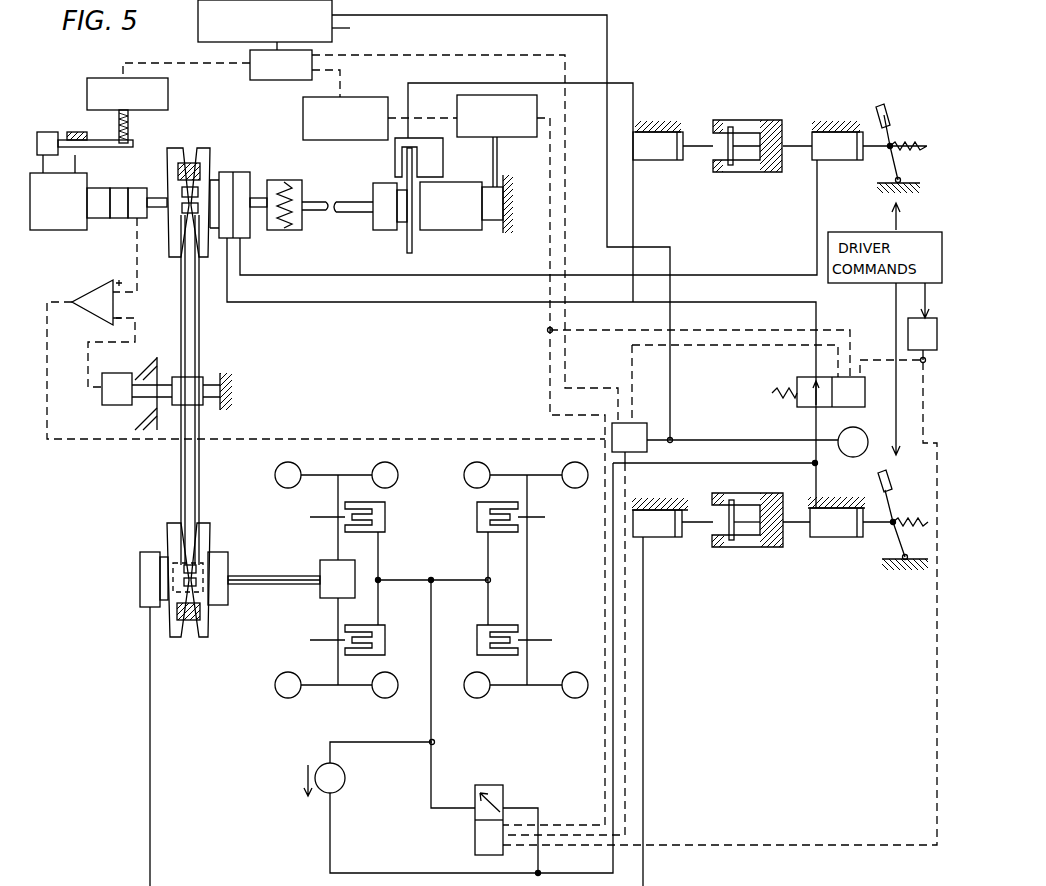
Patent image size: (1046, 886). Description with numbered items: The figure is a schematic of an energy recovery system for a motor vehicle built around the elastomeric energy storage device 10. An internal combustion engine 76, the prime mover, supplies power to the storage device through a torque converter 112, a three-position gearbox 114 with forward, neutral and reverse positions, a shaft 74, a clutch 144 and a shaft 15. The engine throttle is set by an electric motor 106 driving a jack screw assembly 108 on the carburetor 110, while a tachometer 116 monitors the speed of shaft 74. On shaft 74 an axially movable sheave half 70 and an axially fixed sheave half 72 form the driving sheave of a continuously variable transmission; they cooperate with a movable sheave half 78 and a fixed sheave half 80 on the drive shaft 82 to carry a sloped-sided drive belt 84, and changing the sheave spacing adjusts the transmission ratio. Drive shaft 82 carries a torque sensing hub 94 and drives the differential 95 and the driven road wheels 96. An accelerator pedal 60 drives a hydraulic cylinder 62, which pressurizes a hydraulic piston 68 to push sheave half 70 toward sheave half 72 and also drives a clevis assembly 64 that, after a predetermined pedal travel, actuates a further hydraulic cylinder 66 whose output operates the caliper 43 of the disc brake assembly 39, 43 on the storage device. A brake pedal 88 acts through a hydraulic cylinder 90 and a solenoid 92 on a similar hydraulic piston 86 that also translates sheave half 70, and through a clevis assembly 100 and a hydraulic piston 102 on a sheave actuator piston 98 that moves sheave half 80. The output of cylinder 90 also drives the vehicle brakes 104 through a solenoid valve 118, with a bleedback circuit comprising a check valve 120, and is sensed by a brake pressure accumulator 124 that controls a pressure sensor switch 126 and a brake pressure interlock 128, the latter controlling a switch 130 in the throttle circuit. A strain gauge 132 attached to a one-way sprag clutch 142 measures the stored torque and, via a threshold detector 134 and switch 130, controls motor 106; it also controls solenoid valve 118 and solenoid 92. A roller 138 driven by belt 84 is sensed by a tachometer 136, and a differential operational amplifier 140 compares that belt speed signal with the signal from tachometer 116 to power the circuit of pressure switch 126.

The elastomeric energy storage device 10 is at (437, 237).
The shaft 15 is at (352, 214).
The disc brake assembly 39 is at (409, 253).
The caliper 43 is at (443, 165).
The accelerator pedal 60 is at (888, 104).
The hydraulic cylinder 62 is at (812, 132).
The clevis assembly 64 is at (770, 120).
The hydraulic cylinder 66 is at (683, 132).
The hydraulic piston 68 is at (252, 230).
The axially movable sheave half 70 is at (200, 147).
The axially fixed sheave half 72 is at (170, 147).
The shaft 74 is at (155, 210).
The internal combustion engine 76 is at (37, 230).
The movable sheave half 78 is at (208, 630).
The fixed sheave half 80 is at (171, 637).
The drive shaft 82 is at (272, 575).
The drive belt 84 is at (178, 470).
The hydraulic piston 86 is at (228, 172).
The brake pedal 88 is at (892, 478).
The hydraulic cylinder 90 is at (840, 537).
The solenoid 92 is at (800, 407).
The torque sensing hub 94 is at (228, 598).
The differential 95 is at (326, 598).
The driven road wheels 96 is at (299, 466).
The sheave actuator piston 98 is at (140, 590).
The clevis assembly 100 is at (752, 547).
The hydraulic piston 102 is at (663, 537).
The brakes 104 is at (477, 636).
The electric motor 106 is at (168, 88).
The jack screw assembly 108 is at (128, 128).
The carburetor 110 is at (38, 140).
The torque converter 112 is at (100, 188).
The three-position gearbox 114 is at (117, 218).
The tachometer 116 is at (141, 172).
The solenoid valve 118 is at (503, 787).
The check valve 120 is at (345, 770).
The brake pressure accumulator 124 is at (846, 456).
The pressure sensor switch 126 is at (640, 423).
The brake pressure interlock 128 is at (301, 22).
The switch 130 is at (275, 80).
The strain gauge 132 is at (457, 103).
The threshold detector 134 is at (322, 140).
The tachometer 136 is at (112, 405).
The roller 138 is at (203, 378).
The differential operational amplifier 140 is at (100, 316).
The one-way sprag clutch 142 is at (492, 222).
The clutch 144 is at (298, 230).